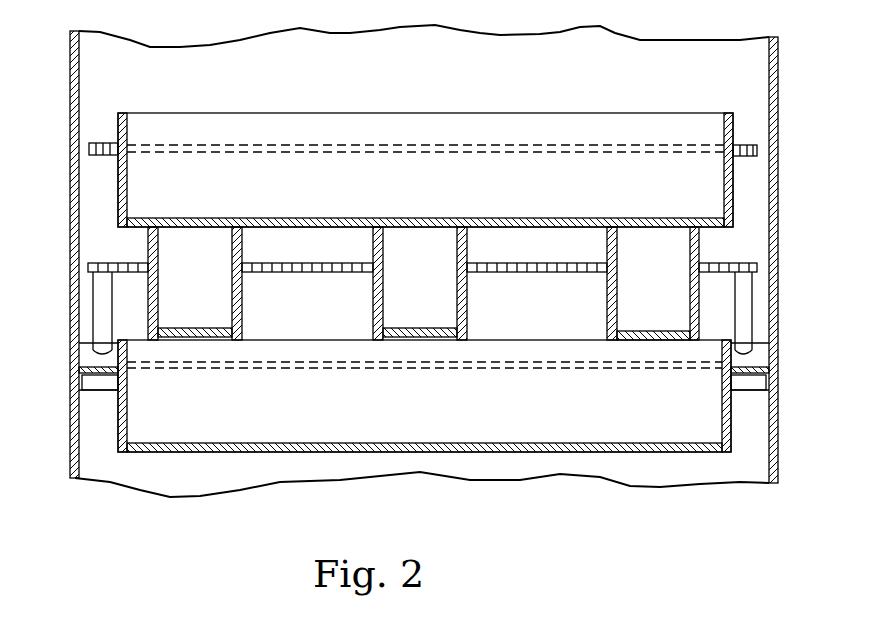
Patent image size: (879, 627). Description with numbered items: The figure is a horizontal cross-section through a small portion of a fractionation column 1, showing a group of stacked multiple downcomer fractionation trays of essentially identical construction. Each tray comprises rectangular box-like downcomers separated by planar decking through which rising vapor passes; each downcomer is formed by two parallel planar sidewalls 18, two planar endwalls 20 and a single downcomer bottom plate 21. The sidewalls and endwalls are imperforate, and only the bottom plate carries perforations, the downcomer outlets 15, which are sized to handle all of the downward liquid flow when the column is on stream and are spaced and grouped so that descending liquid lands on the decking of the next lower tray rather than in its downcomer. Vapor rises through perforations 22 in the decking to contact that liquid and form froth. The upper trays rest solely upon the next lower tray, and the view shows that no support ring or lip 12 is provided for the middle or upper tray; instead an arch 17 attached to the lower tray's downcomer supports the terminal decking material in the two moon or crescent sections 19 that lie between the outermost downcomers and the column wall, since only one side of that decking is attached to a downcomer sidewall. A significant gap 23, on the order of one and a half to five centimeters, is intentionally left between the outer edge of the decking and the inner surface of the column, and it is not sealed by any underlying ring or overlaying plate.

The housing 1 is at (782, 92).
The support ring or lip 12 is at (778, 386).
The downcomer outlets 15 is at (263, 452).
The arch 17 is at (95, 314).
The sidewalls 18 is at (438, 283).
The terminal decking sections 19 is at (105, 266).
The endwalls 20 is at (214, 283).
The downcomer bottom plate 21 is at (437, 453).
The perforations 22 is at (548, 289).
The gap 23 is at (785, 160).